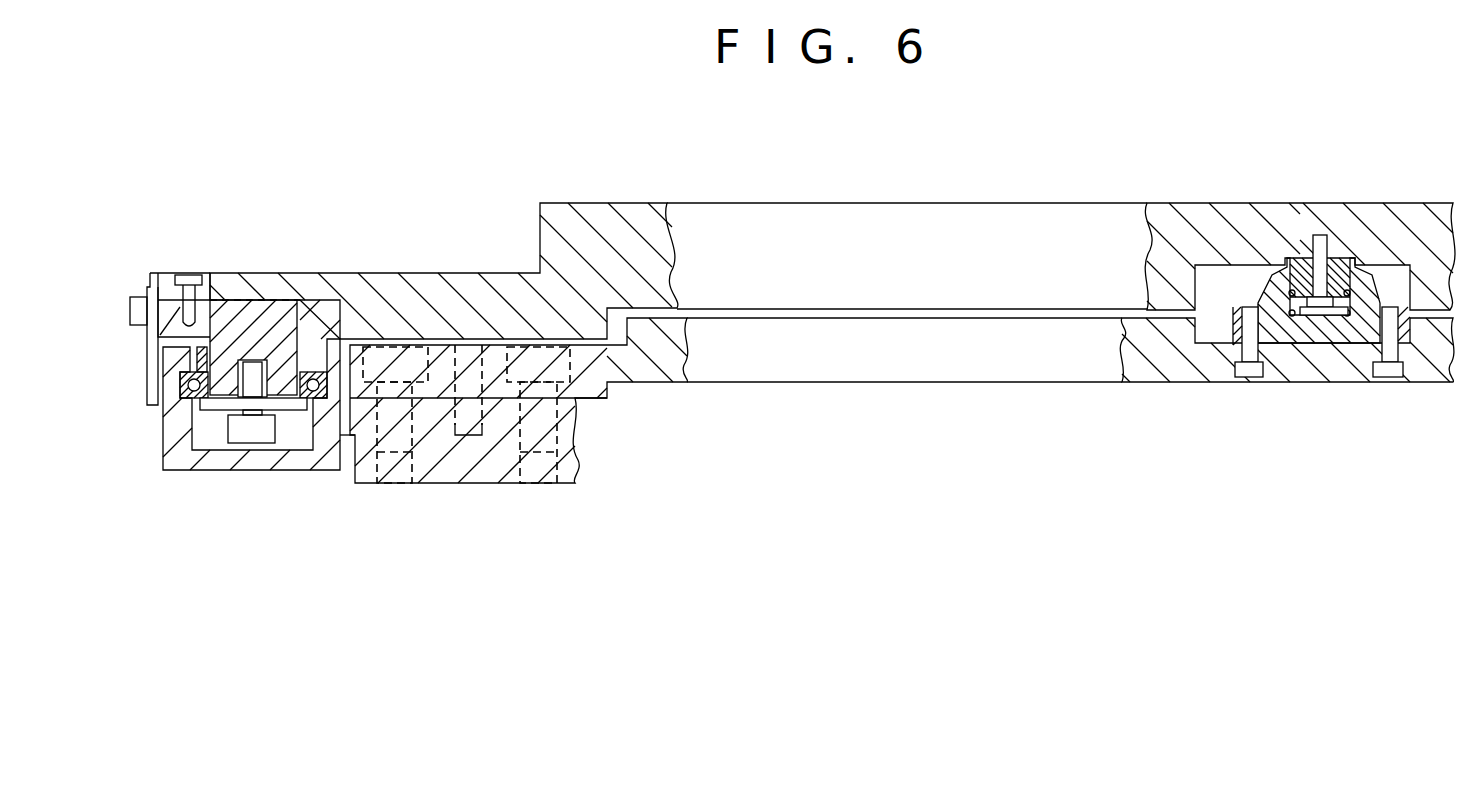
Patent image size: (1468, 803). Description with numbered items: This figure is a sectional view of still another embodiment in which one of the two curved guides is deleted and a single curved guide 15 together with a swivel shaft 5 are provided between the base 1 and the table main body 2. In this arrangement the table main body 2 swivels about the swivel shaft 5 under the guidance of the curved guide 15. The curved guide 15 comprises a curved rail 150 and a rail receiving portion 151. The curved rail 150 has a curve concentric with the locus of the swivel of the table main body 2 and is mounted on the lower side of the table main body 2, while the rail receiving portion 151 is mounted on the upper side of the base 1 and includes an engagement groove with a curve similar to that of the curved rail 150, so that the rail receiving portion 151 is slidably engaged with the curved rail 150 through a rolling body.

The base 1 is at (936, 370).
The table main body 2 is at (896, 215).
The swivel shaft 5 is at (283, 273).
The curved guide 15 is at (1347, 262).
The curved rail 150 is at (1302, 258).
The rail receiving portion 151 is at (1307, 332).